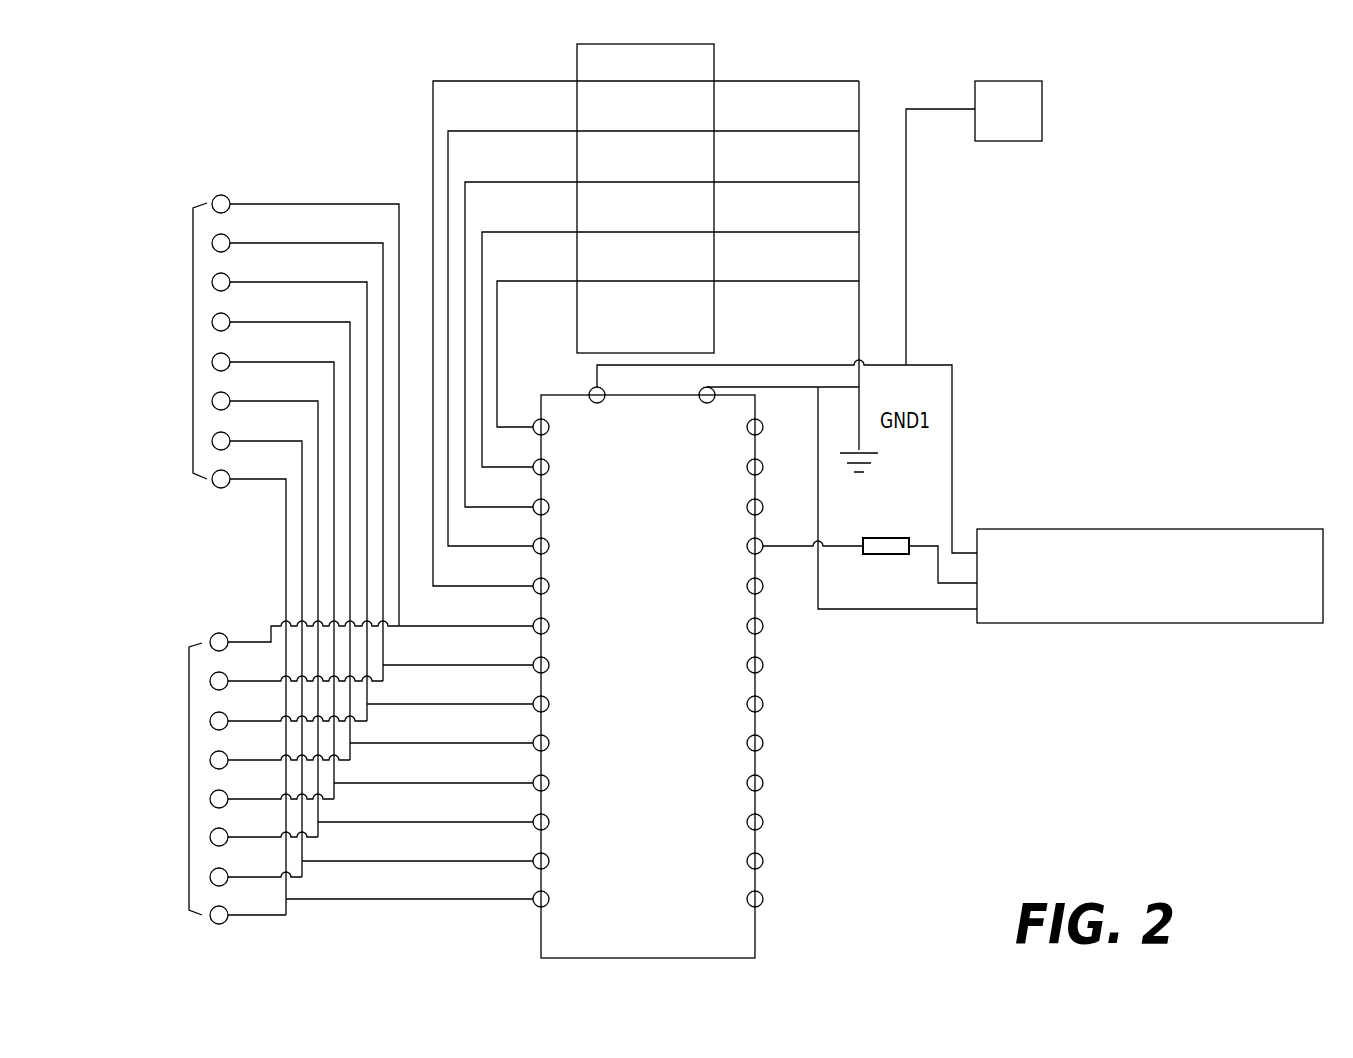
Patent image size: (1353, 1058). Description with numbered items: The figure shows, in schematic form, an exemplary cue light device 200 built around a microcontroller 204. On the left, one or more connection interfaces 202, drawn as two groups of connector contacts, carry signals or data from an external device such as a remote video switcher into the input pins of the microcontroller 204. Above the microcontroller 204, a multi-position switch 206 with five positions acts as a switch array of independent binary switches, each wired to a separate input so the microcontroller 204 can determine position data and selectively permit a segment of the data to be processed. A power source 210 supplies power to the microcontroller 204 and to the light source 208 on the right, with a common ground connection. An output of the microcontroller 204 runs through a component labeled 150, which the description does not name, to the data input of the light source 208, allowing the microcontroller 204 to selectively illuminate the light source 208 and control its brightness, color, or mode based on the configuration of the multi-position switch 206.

The cue light device 200 is at (175, 92).
The connection interfaces 202 is at (193, 334).
The microcontroller 204 is at (732, 940).
The multi-position switch 206 is at (714, 62).
The light source 208 is at (1160, 529).
The power source 210 is at (1042, 112).
The resistor 150 is at (886, 567).